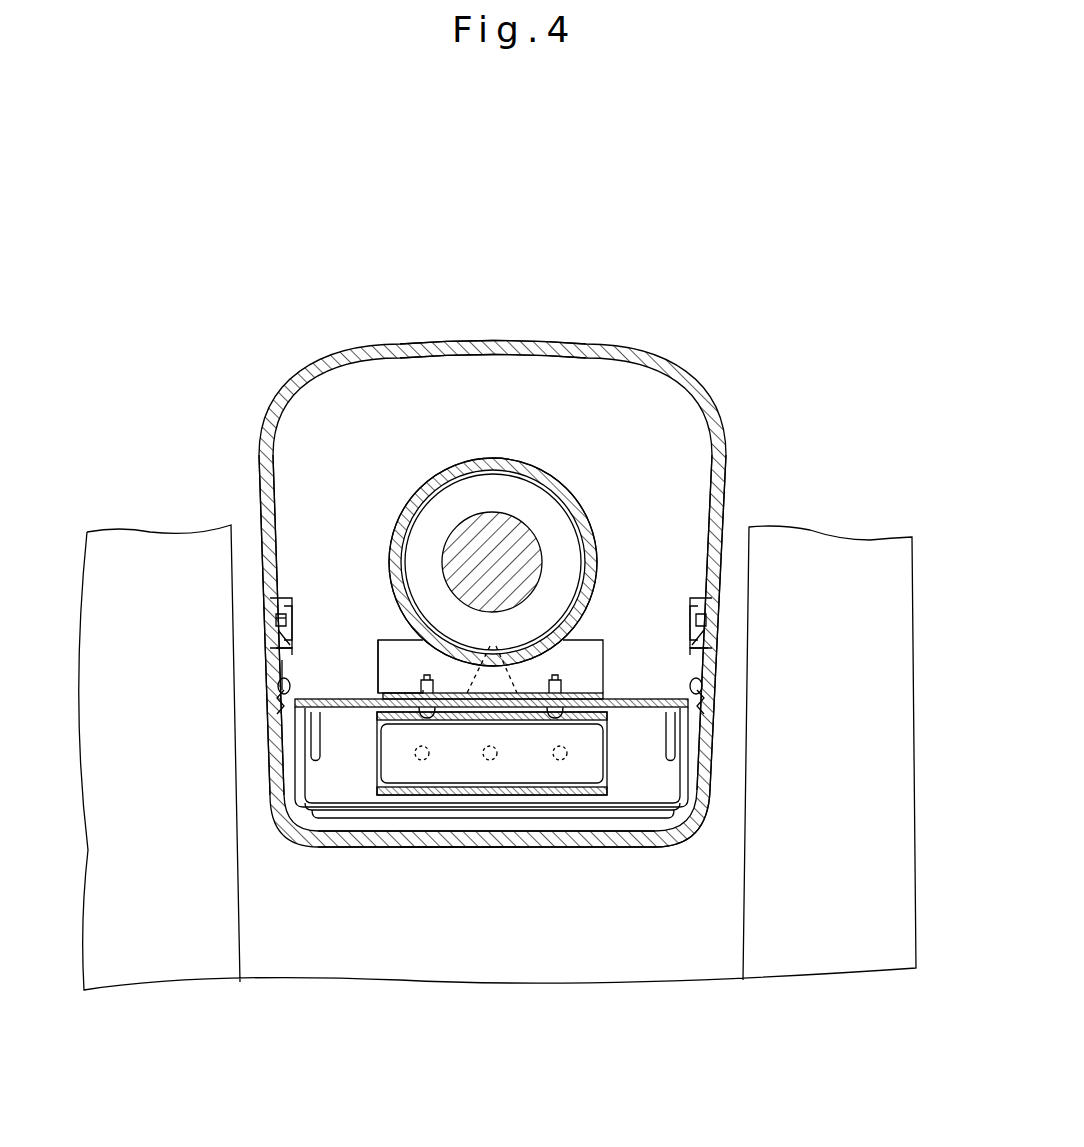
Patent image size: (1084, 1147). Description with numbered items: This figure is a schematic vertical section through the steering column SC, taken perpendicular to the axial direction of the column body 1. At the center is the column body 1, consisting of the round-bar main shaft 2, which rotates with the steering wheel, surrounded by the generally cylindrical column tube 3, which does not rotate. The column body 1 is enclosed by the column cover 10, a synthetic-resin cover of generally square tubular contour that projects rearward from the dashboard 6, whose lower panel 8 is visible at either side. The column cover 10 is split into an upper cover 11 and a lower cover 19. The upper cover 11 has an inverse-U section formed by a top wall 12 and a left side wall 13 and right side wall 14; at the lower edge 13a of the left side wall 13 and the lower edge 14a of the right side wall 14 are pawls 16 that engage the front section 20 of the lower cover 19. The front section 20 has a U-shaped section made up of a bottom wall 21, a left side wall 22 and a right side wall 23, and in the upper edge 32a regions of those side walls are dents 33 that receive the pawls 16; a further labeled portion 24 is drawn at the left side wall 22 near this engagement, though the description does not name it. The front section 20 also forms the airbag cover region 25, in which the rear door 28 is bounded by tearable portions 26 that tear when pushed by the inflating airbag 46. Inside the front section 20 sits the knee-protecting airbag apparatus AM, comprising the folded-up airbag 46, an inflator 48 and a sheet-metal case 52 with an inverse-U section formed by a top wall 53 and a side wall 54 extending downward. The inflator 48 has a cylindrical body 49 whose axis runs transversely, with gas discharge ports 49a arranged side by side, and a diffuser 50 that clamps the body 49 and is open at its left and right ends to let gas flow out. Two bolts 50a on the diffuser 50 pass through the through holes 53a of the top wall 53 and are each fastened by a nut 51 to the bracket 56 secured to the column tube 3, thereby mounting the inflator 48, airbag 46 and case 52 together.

The column body 1 is at (493, 438).
The main shaft 2 is at (513, 528).
The column tube 3 is at (478, 458).
The dashboard 6 is at (497, 813).
The lower panel 8 is at (787, 953).
The column cover 10 is at (476, 559).
The upper cover 11 is at (476, 559).
The top wall 12 is at (380, 352).
The left side wall 13 is at (265, 500).
The lower edge 13a is at (272, 608).
The right side wall 14 is at (722, 470).
The lower edge 14a is at (705, 600).
The pawls 16 is at (291, 618).
The lower cover 19 is at (510, 645).
The front section 20 is at (510, 645).
The bottom wall 21 is at (508, 845).
The left side wall 22 is at (495, 753).
The right side wall 23 is at (712, 735).
The locking piece 24 is at (282, 680).
The airbag cover region 25 is at (691, 858).
The tearable portions 26 is at (282, 700).
The rear door 28 is at (455, 838).
The upper edge 32a is at (272, 622).
The dents 33 is at (280, 650).
The airbag 46 is at (325, 818).
The inflator 48 is at (495, 799).
The body 49 is at (501, 824).
The gas discharge ports 49a is at (489, 762).
The diffuser 50 is at (417, 868).
The bolts 50a is at (423, 652).
The nut 51 is at (420, 690).
The case 52 is at (700, 784).
The top wall 53 is at (390, 686).
The through holes 53a is at (494, 654).
The side wall 54 is at (305, 798).
The bracket 56 is at (393, 655).
The airbag apparatus AM is at (667, 643).
The steering column SC is at (831, 364).